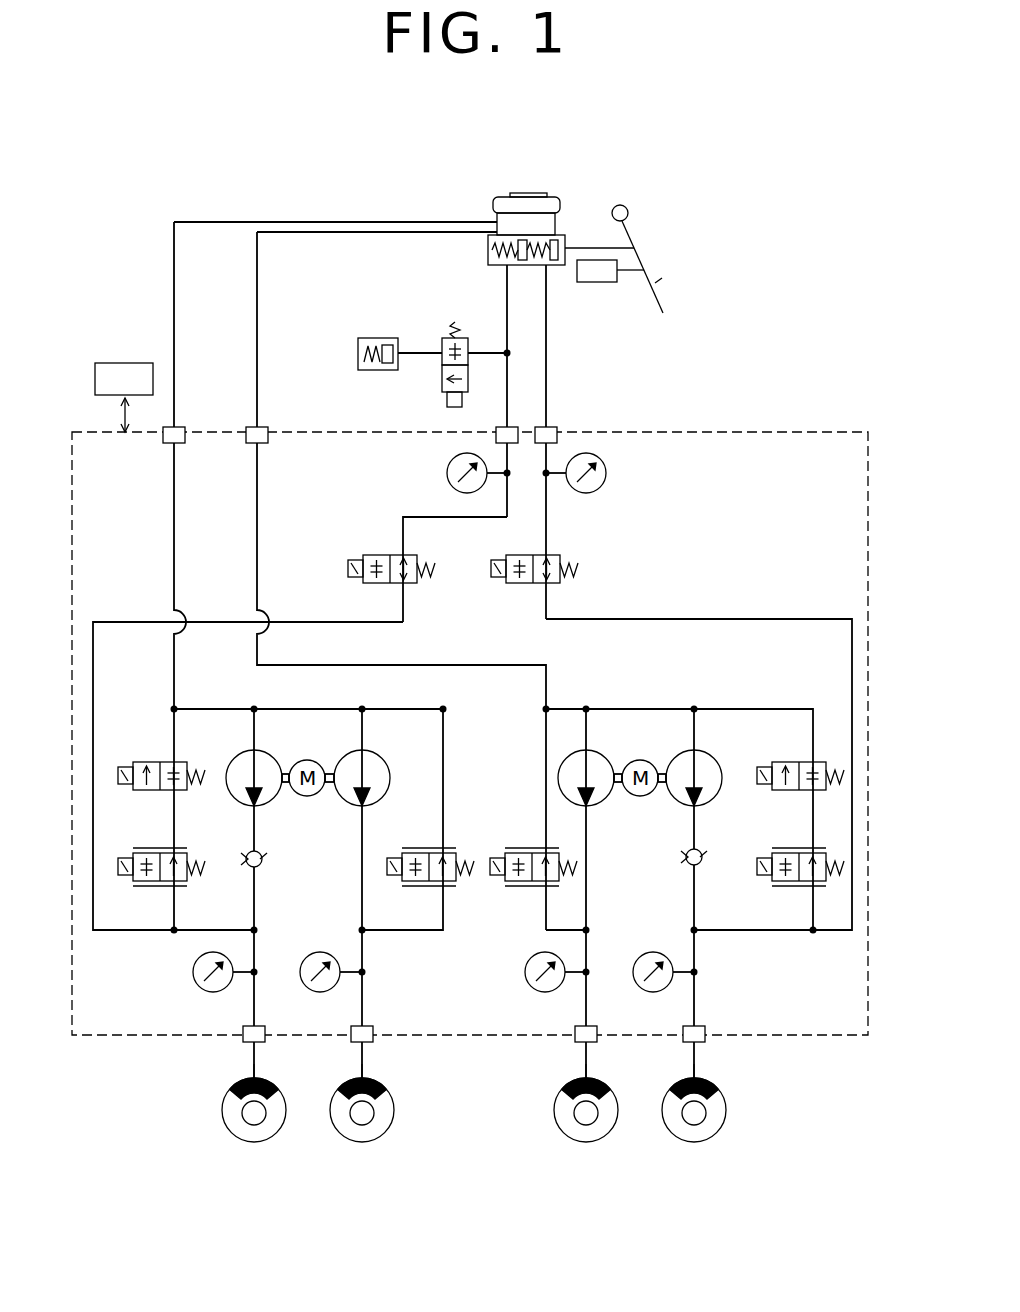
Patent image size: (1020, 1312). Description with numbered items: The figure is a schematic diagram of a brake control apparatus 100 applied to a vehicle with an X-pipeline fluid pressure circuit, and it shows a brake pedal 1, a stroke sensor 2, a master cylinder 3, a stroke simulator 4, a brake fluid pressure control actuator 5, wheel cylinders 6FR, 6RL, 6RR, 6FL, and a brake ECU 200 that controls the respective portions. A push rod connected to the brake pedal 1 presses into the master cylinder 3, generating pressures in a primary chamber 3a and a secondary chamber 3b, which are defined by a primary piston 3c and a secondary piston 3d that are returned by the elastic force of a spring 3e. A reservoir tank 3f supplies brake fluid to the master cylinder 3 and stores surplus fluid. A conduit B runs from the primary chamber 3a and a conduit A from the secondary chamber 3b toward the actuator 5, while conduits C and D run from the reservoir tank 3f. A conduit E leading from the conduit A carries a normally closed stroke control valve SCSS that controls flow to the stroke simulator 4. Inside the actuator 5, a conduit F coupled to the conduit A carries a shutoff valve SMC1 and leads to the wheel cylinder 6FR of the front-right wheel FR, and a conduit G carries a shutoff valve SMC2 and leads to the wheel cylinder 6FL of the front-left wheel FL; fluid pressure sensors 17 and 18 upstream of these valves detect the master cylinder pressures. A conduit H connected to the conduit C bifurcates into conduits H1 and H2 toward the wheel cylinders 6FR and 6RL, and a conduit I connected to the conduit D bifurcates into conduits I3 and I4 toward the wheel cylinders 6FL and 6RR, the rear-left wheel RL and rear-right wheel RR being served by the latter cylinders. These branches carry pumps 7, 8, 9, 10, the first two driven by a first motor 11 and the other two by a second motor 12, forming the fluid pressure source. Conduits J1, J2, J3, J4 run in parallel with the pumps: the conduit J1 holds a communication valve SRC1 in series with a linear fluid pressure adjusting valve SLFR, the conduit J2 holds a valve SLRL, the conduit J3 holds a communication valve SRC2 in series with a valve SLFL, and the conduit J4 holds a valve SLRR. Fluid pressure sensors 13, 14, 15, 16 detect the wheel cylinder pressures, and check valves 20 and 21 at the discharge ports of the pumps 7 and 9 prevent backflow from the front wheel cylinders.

The brake control apparatus 100 is at (752, 160).
The brake pedal 1 is at (672, 298).
The stroke sensor 2 is at (598, 283).
The master cylinder 3 is at (530, 235).
The primary chamber 3a is at (541, 265).
The secondary chamber 3b is at (490, 273).
The primary piston 3c is at (585, 242).
The secondary piston 3d is at (512, 268).
The spring 3e is at (531, 267).
The reservoir tank 3f is at (513, 194).
The stroke simulator 4 is at (373, 338).
The brake fluid pressure control actuator 5 is at (700, 432).
The wheel cylinder 6FR is at (266, 1078).
The wheel cylinder 6RL is at (374, 1078).
The wheel cylinder 6RR is at (598, 1078).
The wheel cylinder 6FL is at (706, 1078).
The pump 7 is at (266, 806).
The pump 8 is at (370, 806).
The pump 9 is at (707, 806).
The pump 10 is at (597, 806).
The first motor 11 is at (307, 797).
The second motor 12 is at (641, 797).
The fluid pressure sensor 13 is at (198, 985).
The fluid pressure sensor 14 is at (306, 985).
The fluid pressure sensor 15 is at (530, 985).
The fluid pressure sensor 16 is at (639, 985).
The fluid pressure sensor 17 is at (606, 473).
The fluid pressure sensor 18 is at (447, 473).
The check valve 20 is at (261, 864).
The check valve 21 is at (686, 864).
The brake ECU 200 is at (127, 363).
The conduit A is at (508, 374).
The conduit B is at (547, 407).
The conduit C is at (315, 221).
The conduit D is at (317, 233).
The conduit E is at (487, 356).
The conduit F is at (137, 622).
The conduit G is at (700, 619).
The conduit H is at (174, 533).
The conduit I is at (257, 533).
The conduit H1 is at (254, 732).
The conduit H2 is at (362, 732).
The conduit I3 is at (694, 731).
The conduit I4 is at (586, 731).
The conduit J1 is at (174, 818).
The conduit J2 is at (446, 742).
The conduit J3 is at (813, 814).
The conduit J4 is at (546, 812).
The communication valve SRC1 is at (133, 745).
The communication valve SRC2 is at (776, 762).
The shutoff valve SMC1 is at (395, 555).
The shutoff valve SMC2 is at (555, 553).
The stroke control valve SCSS is at (440, 383).
The fluid pressure adjusting valve SLFR is at (121, 886).
The fluid pressure adjusting valve SLRL is at (392, 886).
The fluid pressure adjusting valve SLRR is at (495, 886).
The fluid pressure adjusting valve SLFL is at (762, 886).
The front-right wheel FR is at (254, 1143).
The rear-left wheel RL is at (362, 1143).
The rear-right wheel RR is at (586, 1143).
The front-left wheel FL is at (694, 1143).